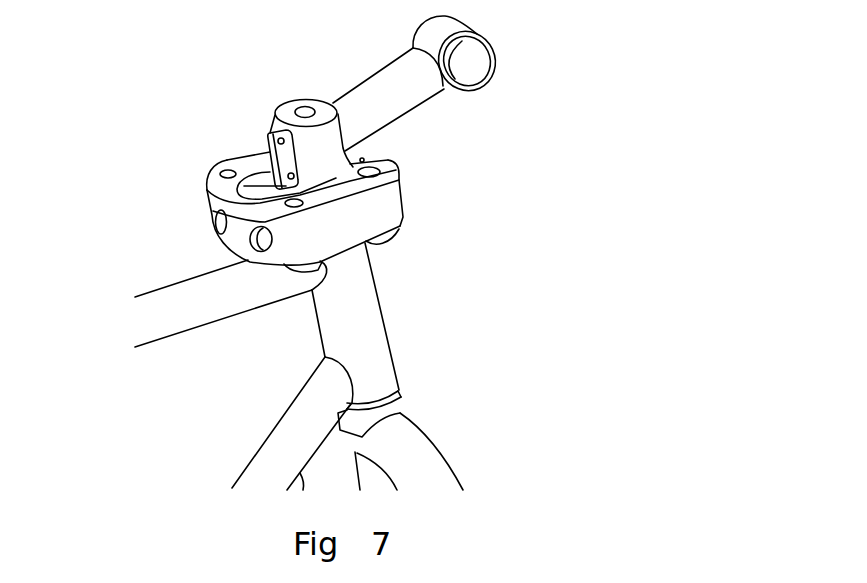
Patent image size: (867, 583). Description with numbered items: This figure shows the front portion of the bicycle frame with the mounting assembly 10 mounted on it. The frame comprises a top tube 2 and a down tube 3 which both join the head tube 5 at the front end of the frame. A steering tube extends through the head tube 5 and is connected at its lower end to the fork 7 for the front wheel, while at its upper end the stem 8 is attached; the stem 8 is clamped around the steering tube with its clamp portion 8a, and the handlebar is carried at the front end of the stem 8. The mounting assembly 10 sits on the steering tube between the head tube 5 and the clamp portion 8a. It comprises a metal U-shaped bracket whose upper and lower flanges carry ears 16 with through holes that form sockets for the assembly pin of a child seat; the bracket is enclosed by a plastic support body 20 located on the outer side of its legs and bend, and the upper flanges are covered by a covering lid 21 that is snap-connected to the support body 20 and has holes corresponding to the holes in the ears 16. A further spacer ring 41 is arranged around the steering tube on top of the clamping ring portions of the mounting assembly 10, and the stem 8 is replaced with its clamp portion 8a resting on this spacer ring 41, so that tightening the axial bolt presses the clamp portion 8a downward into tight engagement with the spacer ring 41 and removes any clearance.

The top tube 2 is at (182, 296).
The down tube 3 is at (273, 443).
The head tube 5 is at (362, 307).
The fork 7 is at (430, 457).
The stem 8 is at (378, 91).
The clamp portion 8a is at (312, 138).
The mounting assembly 10 is at (324, 225).
The ear 16 is at (391, 238).
The support body 20 is at (377, 213).
The covering lid 21 is at (248, 162).
The spacer ring 41 is at (216, 180).